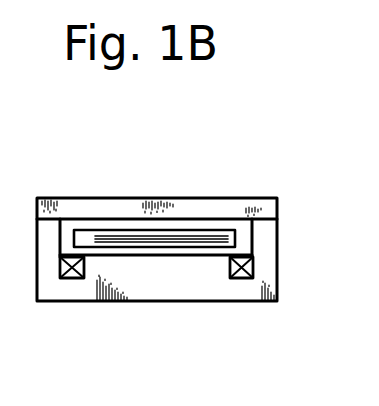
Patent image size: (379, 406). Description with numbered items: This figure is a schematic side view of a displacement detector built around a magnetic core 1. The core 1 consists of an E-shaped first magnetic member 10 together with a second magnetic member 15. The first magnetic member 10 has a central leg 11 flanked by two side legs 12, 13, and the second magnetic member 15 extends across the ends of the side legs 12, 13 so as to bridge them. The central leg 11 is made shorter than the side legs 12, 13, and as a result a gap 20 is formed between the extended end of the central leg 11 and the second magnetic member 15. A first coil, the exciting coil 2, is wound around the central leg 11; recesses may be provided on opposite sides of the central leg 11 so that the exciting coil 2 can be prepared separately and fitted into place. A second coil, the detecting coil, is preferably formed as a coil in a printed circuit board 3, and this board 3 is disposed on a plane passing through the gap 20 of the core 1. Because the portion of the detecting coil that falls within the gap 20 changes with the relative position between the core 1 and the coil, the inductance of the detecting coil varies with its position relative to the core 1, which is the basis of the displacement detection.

The core 1 is at (176, 182).
The exciting coil 2 is at (250, 268).
The printed circuit board 3 is at (235, 237).
The first magnetic member 10 is at (142, 303).
The central leg 11 is at (187, 262).
The side leg 12 is at (52, 248).
The side leg 13 is at (263, 253).
The second magnetic member 15 is at (222, 198).
The gap 20 is at (78, 223).